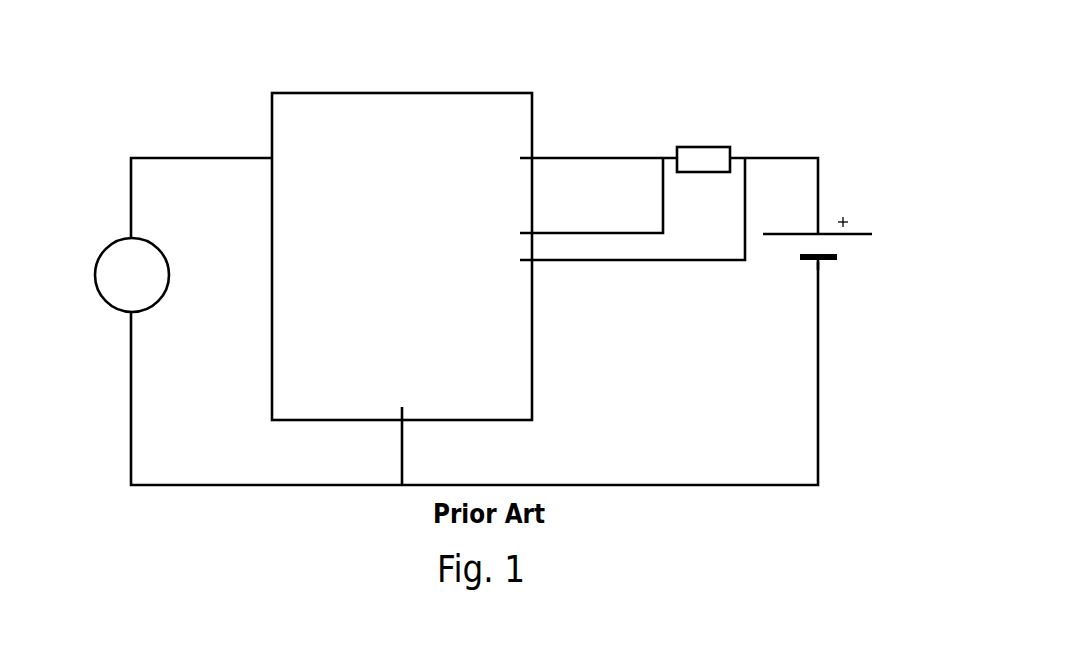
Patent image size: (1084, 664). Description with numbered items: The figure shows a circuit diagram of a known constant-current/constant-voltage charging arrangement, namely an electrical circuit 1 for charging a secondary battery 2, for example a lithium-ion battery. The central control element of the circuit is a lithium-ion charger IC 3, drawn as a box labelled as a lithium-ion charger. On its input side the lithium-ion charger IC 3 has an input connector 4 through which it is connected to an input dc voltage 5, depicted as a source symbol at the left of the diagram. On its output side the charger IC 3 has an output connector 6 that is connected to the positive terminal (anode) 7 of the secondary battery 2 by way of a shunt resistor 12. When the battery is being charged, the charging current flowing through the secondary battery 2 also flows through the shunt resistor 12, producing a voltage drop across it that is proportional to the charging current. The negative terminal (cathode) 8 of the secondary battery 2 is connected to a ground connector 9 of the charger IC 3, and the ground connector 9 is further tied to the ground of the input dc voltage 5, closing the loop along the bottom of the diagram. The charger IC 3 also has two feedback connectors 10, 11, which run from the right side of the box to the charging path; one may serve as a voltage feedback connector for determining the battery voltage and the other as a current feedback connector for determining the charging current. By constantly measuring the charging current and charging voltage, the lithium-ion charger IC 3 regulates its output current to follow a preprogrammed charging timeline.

The electrical circuit 1 is at (748, 78).
The secondary battery 2 is at (820, 242).
The lithium-ion charger IC 3 is at (475, 113).
The input connector 4 is at (272, 158).
The input dc voltage 5 is at (97, 258).
The output connector 6 is at (532, 158).
The positive terminal (anode) 7 is at (818, 226).
The negative terminal (cathode) 8 is at (818, 265).
The ground connector 9 is at (402, 420).
The feedback connector 10 is at (532, 262).
The feedback connector 11 is at (532, 233).
The shunt resistor 12 is at (730, 147).